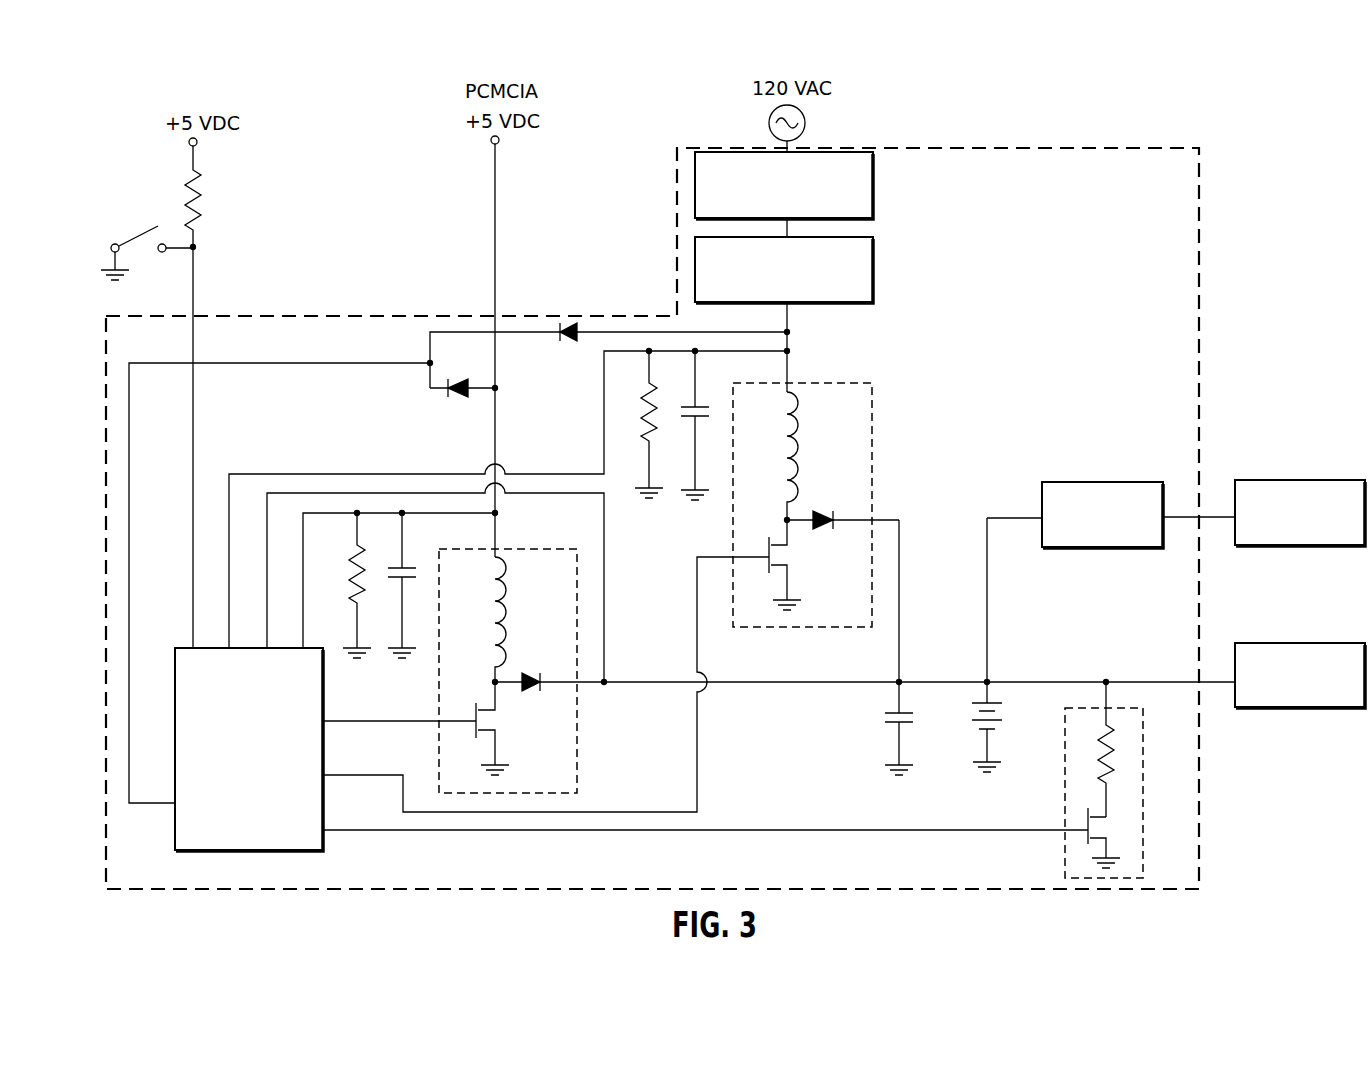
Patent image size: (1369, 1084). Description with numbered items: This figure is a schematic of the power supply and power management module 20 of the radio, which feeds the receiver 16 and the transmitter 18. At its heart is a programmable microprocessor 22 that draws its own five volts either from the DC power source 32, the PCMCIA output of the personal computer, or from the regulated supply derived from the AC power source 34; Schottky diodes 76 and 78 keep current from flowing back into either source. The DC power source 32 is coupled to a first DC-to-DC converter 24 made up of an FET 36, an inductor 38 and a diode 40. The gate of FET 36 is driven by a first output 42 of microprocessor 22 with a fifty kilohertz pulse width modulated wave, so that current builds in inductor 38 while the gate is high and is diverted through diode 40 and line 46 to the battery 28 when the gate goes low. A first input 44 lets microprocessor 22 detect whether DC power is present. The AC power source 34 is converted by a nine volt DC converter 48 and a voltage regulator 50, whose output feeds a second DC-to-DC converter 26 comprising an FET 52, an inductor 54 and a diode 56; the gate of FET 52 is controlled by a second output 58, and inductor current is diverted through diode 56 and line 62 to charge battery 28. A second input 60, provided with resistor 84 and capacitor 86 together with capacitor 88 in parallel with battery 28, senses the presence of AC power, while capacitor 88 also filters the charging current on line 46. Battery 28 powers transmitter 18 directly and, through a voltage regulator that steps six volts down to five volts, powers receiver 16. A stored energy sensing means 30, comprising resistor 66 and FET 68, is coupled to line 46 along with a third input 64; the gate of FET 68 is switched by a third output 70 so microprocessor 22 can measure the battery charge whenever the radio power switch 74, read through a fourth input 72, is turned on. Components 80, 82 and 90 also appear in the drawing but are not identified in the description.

The receiver 16 is at (1304, 480).
The transmitter 18 is at (1296, 643).
The power supply and power management module 20 is at (1199, 338).
The microprocessor 22 is at (305, 840).
The first DC-to-DC converter 24 is at (543, 671).
The second DC-to-DC converter 26 is at (844, 502).
The battery 28 is at (980, 728).
The stored energy sensing means 30 is at (1079, 780).
The DC power source 32 is at (497, 143).
The AC power source 34 is at (806, 118).
The FET 36 is at (482, 722).
The inductor 38 is at (500, 595).
The diode 40 is at (530, 676).
The first output 42 is at (340, 720).
The first input 44 is at (304, 620).
The line 46 is at (808, 682).
The 9 volt DC converter 48 is at (873, 165).
The voltage regulator 50 is at (873, 250).
The FET 52 is at (776, 556).
The inductor 54 is at (792, 425).
The diode 56 is at (820, 508).
The second output 58 is at (340, 775).
The second input 60 is at (283, 474).
The line 62 is at (899, 548).
The third input 64 is at (342, 493).
The resistor 66 is at (1112, 757).
The FET 68 is at (1110, 833).
The third output 70 is at (328, 830).
The fourth input 72 is at (193, 627).
The radio power switch 74 is at (143, 232).
The Schottky diode 76 is at (562, 340).
The Schottky diode 78 is at (452, 393).
The resistor 80 is at (356, 548).
The capacitor 82 is at (404, 560).
The resistor 84 is at (643, 430).
The capacitor 86 is at (697, 405).
The capacitor 88 is at (893, 724).
The resistor 90 is at (200, 196).